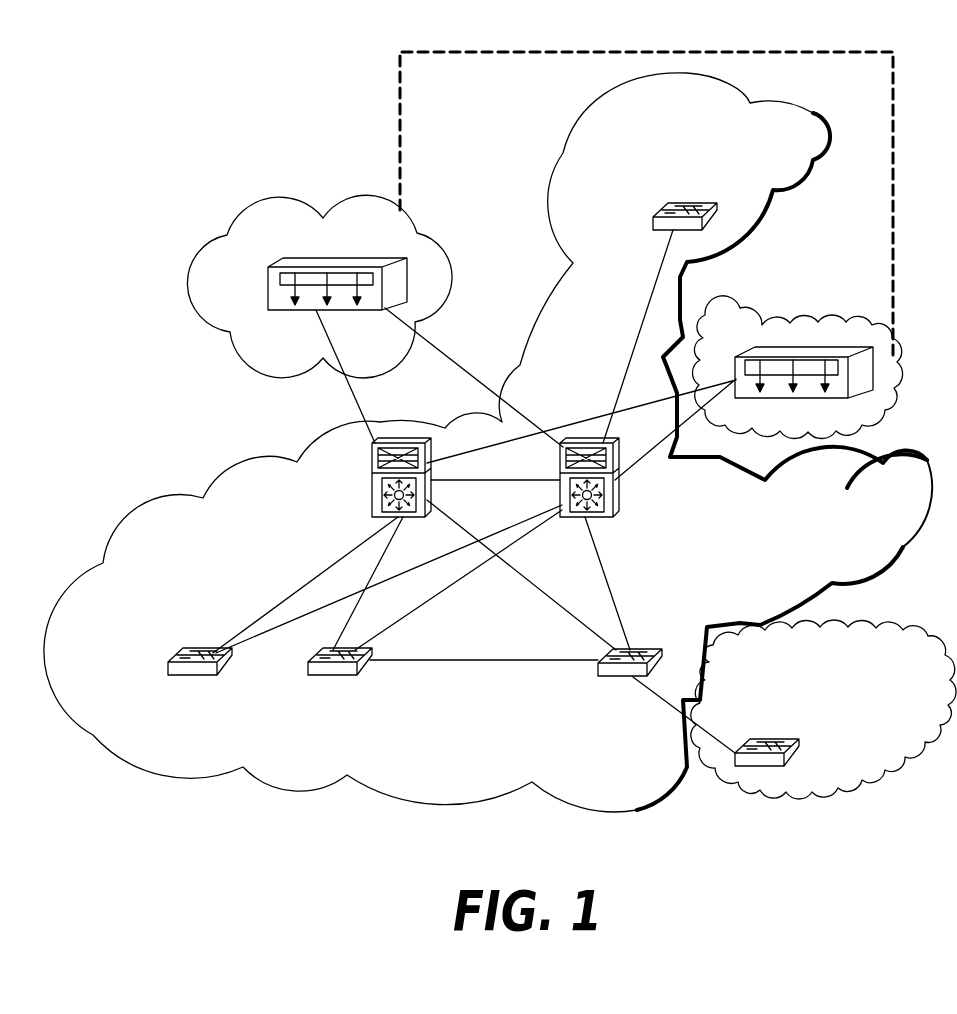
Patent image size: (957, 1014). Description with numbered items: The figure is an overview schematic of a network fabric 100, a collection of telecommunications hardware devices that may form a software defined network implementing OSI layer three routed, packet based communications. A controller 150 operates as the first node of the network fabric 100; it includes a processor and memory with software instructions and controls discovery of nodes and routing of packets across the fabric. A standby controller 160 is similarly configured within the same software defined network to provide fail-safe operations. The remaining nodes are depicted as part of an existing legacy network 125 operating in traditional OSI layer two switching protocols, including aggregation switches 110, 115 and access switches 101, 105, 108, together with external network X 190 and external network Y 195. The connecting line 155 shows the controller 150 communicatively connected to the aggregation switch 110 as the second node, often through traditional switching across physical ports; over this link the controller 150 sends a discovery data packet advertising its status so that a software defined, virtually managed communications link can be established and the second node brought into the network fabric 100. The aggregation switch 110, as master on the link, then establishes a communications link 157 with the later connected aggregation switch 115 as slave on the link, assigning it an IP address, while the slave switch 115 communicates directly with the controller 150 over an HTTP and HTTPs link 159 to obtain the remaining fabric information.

The network fabric 100 is at (632, 52).
The access switch 101 is at (168, 670).
The access switch 105 is at (326, 675).
The access switch 108 is at (612, 678).
The aggregation switch 110 is at (372, 493).
The aggregation switch 115 is at (618, 502).
The legacy network 125 is at (830, 553).
The controller 150 is at (353, 257).
The communications link 155 is at (349, 395).
The link between AG-1 and AG-2 157 is at (468, 482).
The HTTP and HTTPs link 159 is at (467, 365).
The standby controller 160 is at (813, 348).
The external network X 190 is at (688, 203).
The external network Y 195 is at (817, 704).